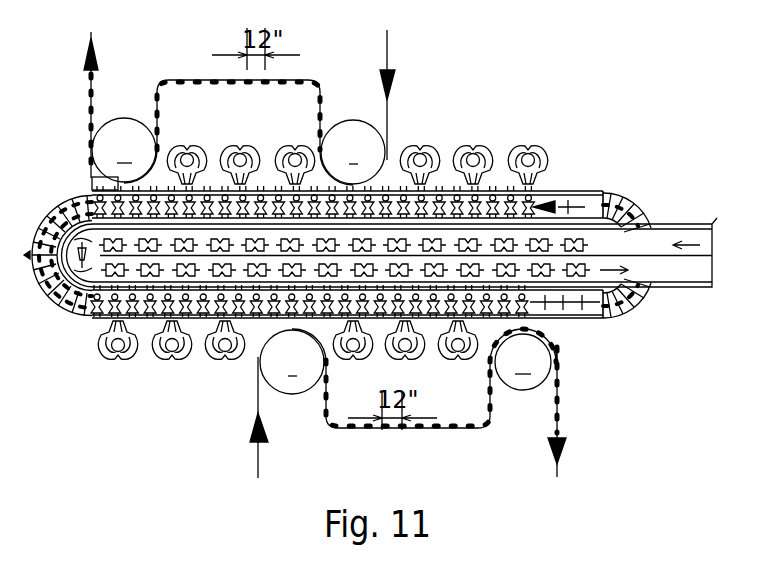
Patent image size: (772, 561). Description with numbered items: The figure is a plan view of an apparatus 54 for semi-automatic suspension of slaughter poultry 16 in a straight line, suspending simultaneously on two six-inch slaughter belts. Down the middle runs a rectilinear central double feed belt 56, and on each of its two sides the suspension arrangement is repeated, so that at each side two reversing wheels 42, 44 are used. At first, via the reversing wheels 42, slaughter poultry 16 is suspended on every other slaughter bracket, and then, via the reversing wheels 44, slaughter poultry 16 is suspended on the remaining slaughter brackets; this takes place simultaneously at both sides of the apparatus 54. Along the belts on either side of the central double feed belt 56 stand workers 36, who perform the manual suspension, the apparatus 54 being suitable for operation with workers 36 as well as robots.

The slaughter poultry 16 is at (90, 113).
The worker 36 is at (245, 143).
The first reversing wheel 42 is at (322, 257).
The second reversing wheel 44 is at (321, 254).
The apparatus 54 is at (538, 127).
The central double feed belt 56 is at (663, 273).